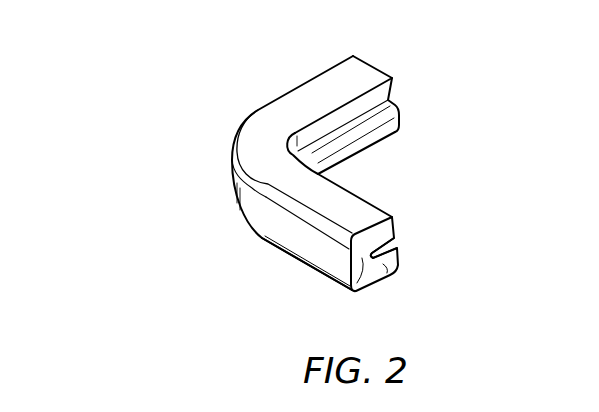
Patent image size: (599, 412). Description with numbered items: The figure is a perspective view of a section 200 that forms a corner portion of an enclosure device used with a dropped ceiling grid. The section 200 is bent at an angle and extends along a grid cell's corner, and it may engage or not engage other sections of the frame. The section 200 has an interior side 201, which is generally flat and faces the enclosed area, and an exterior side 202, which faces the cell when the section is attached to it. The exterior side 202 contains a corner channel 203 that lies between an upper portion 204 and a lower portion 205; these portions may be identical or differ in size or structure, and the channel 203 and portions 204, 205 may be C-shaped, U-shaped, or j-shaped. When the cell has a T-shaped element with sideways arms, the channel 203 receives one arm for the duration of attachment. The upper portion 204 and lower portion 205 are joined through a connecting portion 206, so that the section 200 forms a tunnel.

The section 200 is at (158, 133).
The interior side 201 is at (273, 224).
The exterior side 202 is at (364, 153).
The corner channel 203 is at (383, 104).
The upper portion 204 is at (337, 63).
The lower portion 205 is at (398, 129).
The connecting portion 206 is at (348, 285).